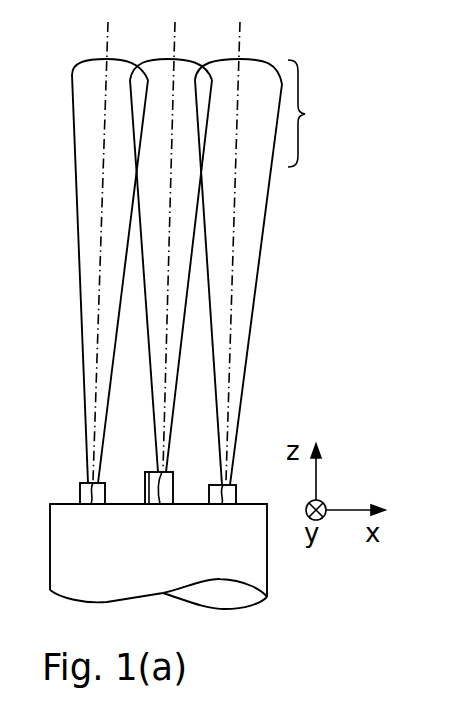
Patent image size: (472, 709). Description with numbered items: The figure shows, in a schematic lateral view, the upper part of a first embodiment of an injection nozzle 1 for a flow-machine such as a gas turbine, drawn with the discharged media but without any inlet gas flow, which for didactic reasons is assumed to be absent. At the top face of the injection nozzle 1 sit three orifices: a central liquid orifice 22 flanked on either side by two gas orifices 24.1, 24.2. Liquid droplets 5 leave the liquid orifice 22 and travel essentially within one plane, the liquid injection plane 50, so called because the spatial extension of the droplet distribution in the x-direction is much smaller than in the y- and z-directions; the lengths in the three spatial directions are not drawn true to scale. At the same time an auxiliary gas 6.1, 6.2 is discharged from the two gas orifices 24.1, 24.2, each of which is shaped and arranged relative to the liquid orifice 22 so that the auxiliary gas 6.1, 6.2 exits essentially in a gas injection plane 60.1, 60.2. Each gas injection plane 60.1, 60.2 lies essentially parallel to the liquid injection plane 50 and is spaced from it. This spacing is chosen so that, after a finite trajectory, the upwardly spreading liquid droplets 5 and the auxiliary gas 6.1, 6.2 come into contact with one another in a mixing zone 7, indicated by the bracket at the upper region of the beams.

The injection nozzle 1 is at (277, 557).
The liquid droplets 5 is at (167, 76).
The auxiliary gas 6.1 is at (87, 77).
The auxiliary gas 6.2 is at (247, 77).
The mixing zone 7 is at (307, 113).
The liquid orifice 22 is at (160, 505).
The gas orifice 24.1 is at (93, 505).
The gas orifice 24.2 is at (223, 505).
The liquid injection plane 50 is at (168, 255).
The gas injection plane 60.1 is at (100, 282).
The gas injection plane 60.2 is at (230, 322).